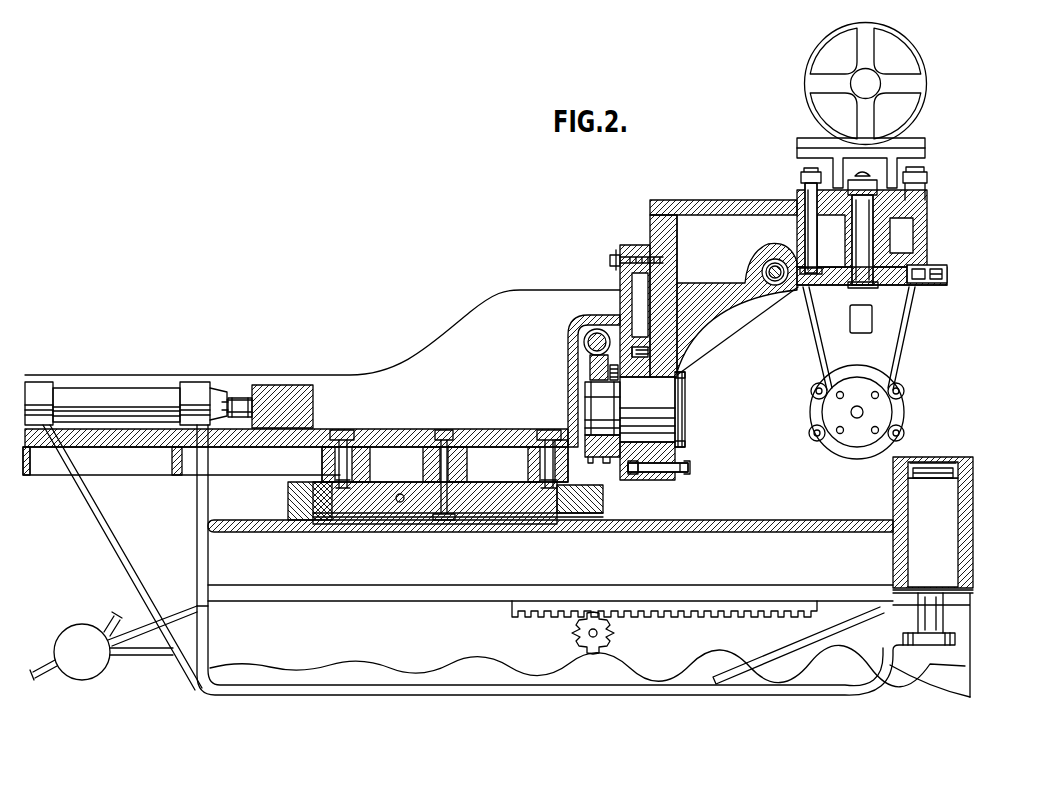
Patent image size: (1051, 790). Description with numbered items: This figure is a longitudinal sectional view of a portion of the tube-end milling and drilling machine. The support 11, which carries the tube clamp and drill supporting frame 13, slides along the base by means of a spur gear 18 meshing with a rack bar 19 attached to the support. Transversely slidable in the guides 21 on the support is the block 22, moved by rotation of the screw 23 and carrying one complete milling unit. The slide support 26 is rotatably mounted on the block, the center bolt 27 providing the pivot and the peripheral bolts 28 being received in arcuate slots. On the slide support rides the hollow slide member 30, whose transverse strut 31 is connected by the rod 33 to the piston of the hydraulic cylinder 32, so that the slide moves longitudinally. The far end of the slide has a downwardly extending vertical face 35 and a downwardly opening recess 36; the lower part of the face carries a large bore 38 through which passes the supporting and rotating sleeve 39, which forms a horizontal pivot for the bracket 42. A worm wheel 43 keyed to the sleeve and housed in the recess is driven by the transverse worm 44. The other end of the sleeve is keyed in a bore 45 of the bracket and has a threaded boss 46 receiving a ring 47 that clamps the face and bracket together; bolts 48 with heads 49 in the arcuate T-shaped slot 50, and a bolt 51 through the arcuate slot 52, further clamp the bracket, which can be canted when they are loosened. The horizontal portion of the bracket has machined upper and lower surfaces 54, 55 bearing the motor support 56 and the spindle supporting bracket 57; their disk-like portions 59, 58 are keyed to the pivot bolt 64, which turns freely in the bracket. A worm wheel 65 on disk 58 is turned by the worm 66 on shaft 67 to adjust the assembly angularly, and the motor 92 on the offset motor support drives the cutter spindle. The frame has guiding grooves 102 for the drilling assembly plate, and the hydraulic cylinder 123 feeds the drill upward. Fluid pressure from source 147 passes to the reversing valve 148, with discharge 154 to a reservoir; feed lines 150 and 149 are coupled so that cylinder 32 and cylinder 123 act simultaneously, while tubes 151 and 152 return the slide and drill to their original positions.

The support 11 is at (208, 528).
The tube clamp and drill supporting frame 13 is at (973, 508).
The spur gear 18 is at (608, 638).
The rack bar 19 is at (690, 614).
The guides 21 is at (290, 500).
The block 22 is at (500, 516).
The screw 23 is at (398, 503).
The slide support 26 is at (172, 470).
The center bolt 27 is at (446, 431).
The peripheral bolts 28 is at (355, 431).
The hollow slide member 30 is at (455, 345).
The transverse strut 31 is at (300, 385).
The hydraulic cylinder 32 is at (133, 388).
The rod 33 is at (238, 397).
The vertical face 35 is at (636, 246).
The recess 36 is at (578, 352).
The bore 38 is at (650, 452).
The supporting and rotating sleeve 39 is at (662, 410).
The bracket 42 is at (720, 327).
The worm wheel 43 is at (598, 464).
The worm 44 is at (596, 329).
The bore 45 is at (686, 443).
The threaded boss 46 is at (686, 398).
The ring 47 is at (686, 376).
The bolts 48 is at (686, 473).
The heads 49 is at (635, 474).
The T-shaped slot 50 is at (652, 350).
The bolt 51 is at (610, 258).
The slot 52 is at (618, 252).
The upper surface 54 is at (927, 205).
The lower surface 55 is at (930, 265).
The motor support 56 is at (922, 152).
The spindle supporting bracket 57 is at (893, 330).
The disk-like portion 58 is at (915, 286).
The disk-like portion 59 is at (800, 194).
The pivot bolt 64 is at (863, 286).
The worm wheel 65 is at (948, 273).
The worm 66 is at (762, 266).
The shaft 67 is at (775, 259).
The motor 92 is at (828, 48).
The guiding grooves 102 is at (915, 466).
The hydraulic cylinder 123 is at (916, 622).
The source of fluid pressure 147 is at (48, 662).
The reversing valve 148 is at (88, 666).
The hydraulic feed line 149 is at (398, 695).
The hydraulic feed line 150 is at (103, 530).
The tube 151 is at (197, 565).
The tube 152 is at (470, 666).
The discharge 154 is at (113, 614).